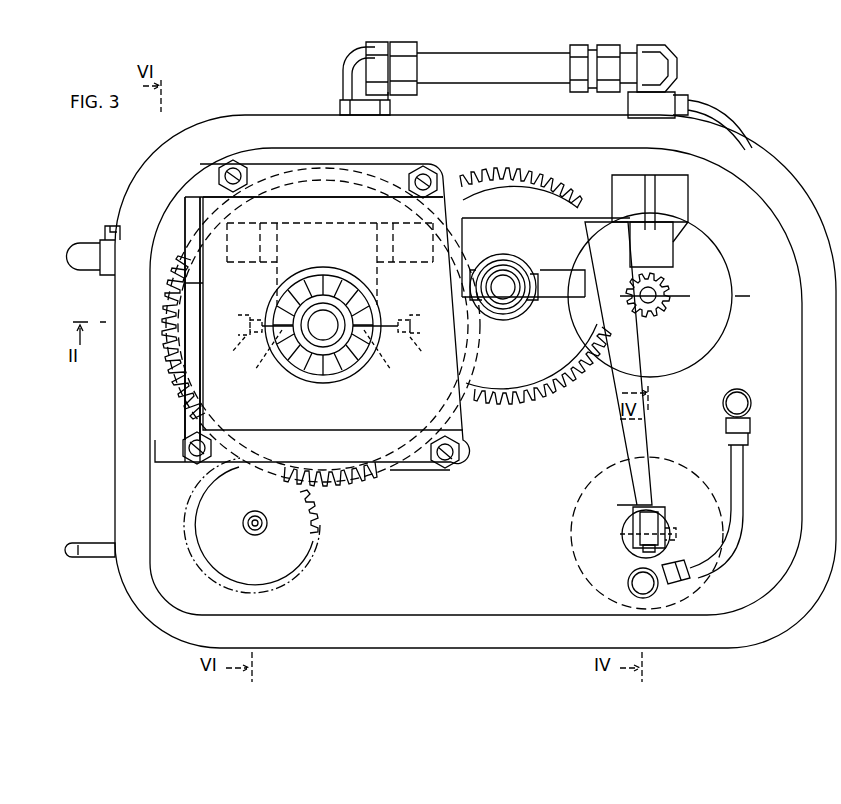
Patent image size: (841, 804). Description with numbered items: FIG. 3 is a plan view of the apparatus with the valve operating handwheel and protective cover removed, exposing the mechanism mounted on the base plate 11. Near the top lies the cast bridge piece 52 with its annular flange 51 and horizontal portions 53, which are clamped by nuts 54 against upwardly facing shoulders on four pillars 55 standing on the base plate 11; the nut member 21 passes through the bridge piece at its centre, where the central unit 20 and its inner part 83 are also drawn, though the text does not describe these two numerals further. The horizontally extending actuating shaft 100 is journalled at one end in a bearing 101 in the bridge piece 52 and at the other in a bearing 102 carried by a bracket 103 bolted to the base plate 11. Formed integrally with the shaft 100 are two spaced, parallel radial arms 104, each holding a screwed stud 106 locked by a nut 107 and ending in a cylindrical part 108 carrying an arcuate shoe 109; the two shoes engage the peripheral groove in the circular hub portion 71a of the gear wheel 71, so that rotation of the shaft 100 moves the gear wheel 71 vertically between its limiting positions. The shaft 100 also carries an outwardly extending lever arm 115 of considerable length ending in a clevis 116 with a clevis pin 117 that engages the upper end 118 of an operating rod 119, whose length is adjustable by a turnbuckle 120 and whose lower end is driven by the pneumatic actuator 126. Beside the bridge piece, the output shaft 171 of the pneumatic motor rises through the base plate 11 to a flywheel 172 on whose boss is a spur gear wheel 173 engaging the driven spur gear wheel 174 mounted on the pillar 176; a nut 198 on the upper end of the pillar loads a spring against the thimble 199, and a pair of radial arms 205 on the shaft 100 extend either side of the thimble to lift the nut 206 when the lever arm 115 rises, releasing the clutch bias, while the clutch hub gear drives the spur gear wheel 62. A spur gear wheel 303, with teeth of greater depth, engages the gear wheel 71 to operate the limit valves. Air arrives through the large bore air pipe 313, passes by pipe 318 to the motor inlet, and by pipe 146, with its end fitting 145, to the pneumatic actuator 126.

The base plate 11 is at (192, 585).
The large bore air pipe 313 is at (93, 247).
The pipe 318 is at (497, 72).
The horizontal portions 53 is at (295, 172).
The nuts 54 is at (232, 160).
The pillars 55 is at (248, 176).
The bearing 101 is at (186, 200).
The annular flange 51 is at (313, 375).
The gear wheel 71 is at (196, 376).
The cast bridge piece 52 is at (207, 318).
The spur gear wheel 62 is at (200, 352).
The motor 20 is at (325, 335).
The nut member 21 is at (348, 310).
The shaft bore 83 is at (313, 292).
The circular hub portion 71a is at (285, 300).
The radial arms 104 is at (268, 292).
The screwed stud 106 is at (250, 320).
The nut 107 is at (246, 338).
The cylindrical part 108 is at (412, 326).
The arcuate shoe 109 is at (262, 350).
The radial arms 205 is at (542, 272).
The spur gear wheel 303 is at (300, 525).
The driven spur gear wheel 174 is at (566, 385).
The actuating shaft 100 is at (520, 228).
The pillar 176 is at (497, 275).
The nut 198 is at (500, 300).
The thimble 199 is at (508, 300).
The nut 206 is at (528, 302).
The lever arm 115 is at (624, 432).
The bracket 103 is at (678, 238).
The bearing 102 is at (660, 257).
The flywheel 172 is at (712, 297).
The spur gear wheel 173 is at (672, 310).
The output shaft 171 is at (655, 295).
The pneumatic actuator 126 is at (686, 462).
The turnbuckle 120 is at (626, 520).
The clevis 116 is at (656, 524).
The clevis pin 117 is at (668, 535).
The upper end 118 is at (630, 540).
The operating rod 119 is at (645, 548).
The pipe 146 is at (742, 495).
The tube fitting 145 is at (645, 592).